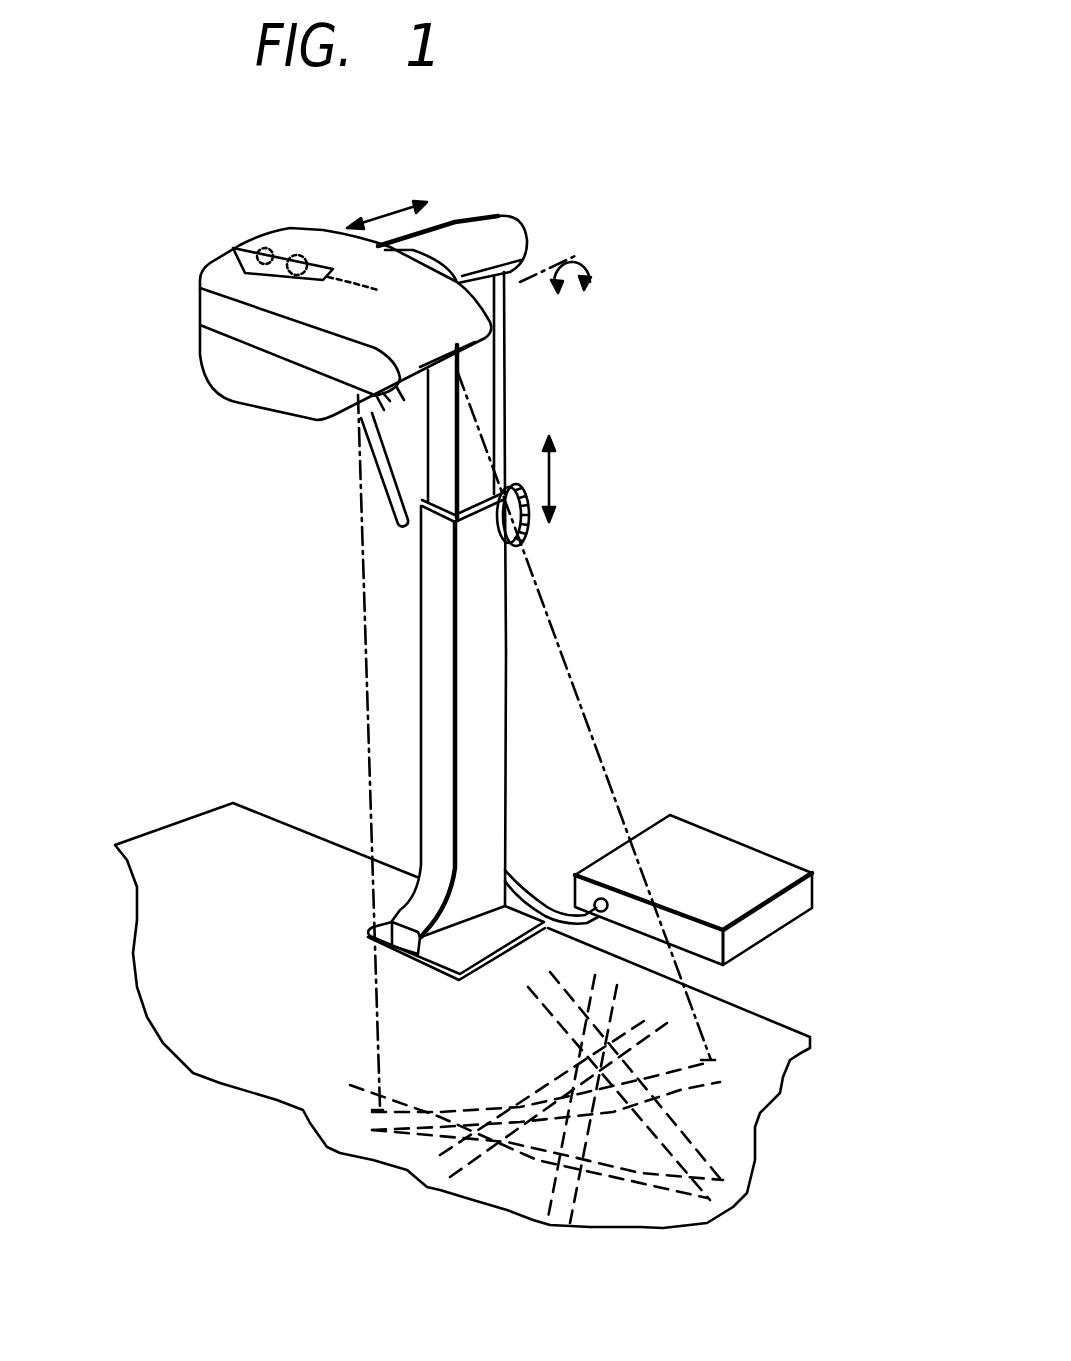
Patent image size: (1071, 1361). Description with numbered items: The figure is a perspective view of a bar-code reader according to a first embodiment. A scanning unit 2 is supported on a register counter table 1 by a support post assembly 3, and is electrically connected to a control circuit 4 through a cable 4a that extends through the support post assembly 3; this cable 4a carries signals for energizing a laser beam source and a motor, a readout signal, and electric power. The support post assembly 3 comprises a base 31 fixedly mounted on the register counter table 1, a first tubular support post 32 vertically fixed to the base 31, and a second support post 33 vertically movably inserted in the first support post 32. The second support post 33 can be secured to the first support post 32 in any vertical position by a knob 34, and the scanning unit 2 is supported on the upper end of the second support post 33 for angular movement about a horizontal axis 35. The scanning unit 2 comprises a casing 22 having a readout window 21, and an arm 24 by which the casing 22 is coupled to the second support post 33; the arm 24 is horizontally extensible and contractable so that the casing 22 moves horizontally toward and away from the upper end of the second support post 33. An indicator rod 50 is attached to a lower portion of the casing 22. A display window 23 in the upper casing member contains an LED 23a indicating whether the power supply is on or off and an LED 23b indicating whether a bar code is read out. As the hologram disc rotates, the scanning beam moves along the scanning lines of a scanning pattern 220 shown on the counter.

The register counter table 1 is at (160, 845).
The scanning unit 2 is at (318, 279).
The casing 22 is at (213, 303).
The display window 23 is at (240, 243).
The LED 23a is at (268, 250).
The LED 23b is at (378, 295).
The arm 24 is at (470, 222).
The readout window 21 is at (387, 393).
The indicator rod 50 is at (380, 486).
The support post assembly 3 is at (504, 649).
The base 31 is at (468, 960).
The first tubular support post 32 is at (510, 737).
The second support post 33 is at (507, 407).
The knob 34 is at (520, 530).
The horizontal axis 35 is at (523, 286).
The control circuit 4 is at (727, 855).
The cable 4a is at (537, 887).
The scanning pattern 220 is at (745, 1104).